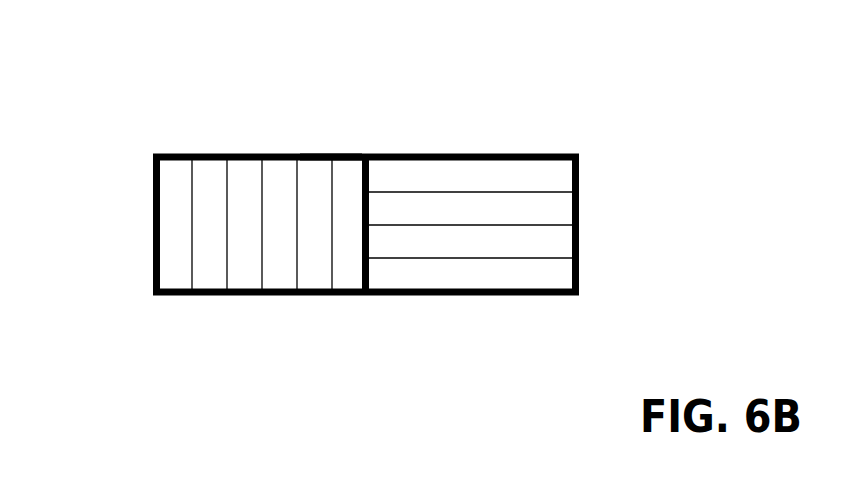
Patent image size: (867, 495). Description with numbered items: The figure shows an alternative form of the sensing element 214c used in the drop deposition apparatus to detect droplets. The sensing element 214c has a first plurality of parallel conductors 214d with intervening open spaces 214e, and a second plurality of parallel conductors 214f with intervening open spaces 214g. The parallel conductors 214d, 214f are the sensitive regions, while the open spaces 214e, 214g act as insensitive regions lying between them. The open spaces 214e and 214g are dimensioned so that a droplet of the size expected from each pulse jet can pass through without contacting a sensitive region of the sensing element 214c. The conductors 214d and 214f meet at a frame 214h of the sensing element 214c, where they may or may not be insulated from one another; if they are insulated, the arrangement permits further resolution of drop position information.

The sensing element 214c is at (137, 256).
The first plurality of parallel conductors 214d is at (228, 190).
The open spaces 214e is at (248, 275).
The second plurality of parallel conductors 214f is at (507, 192).
The open spaces 214g is at (562, 208).
The frame 214h is at (346, 154).